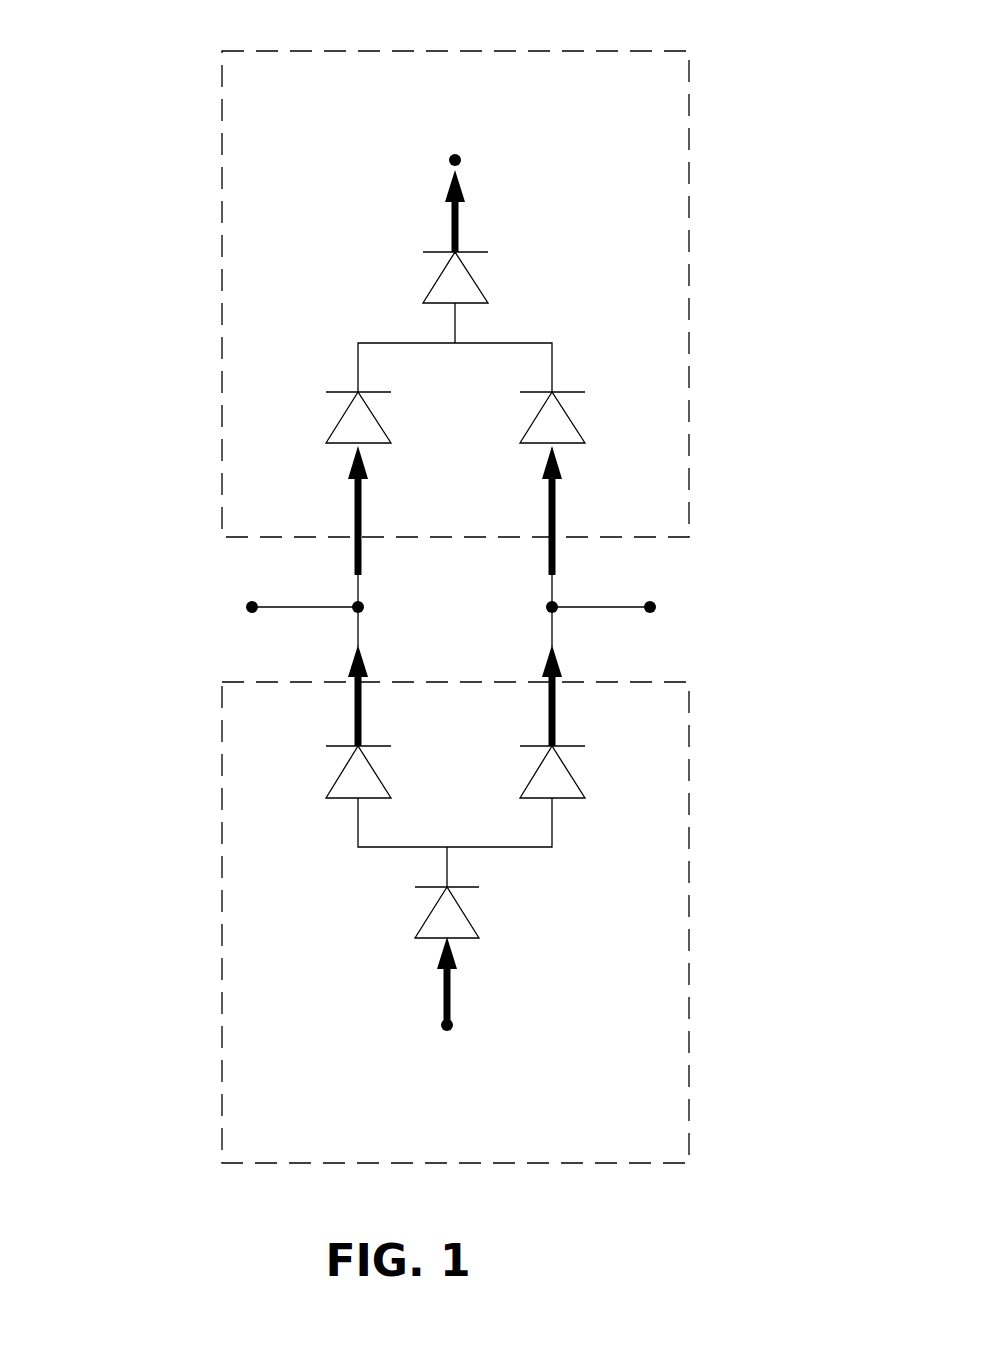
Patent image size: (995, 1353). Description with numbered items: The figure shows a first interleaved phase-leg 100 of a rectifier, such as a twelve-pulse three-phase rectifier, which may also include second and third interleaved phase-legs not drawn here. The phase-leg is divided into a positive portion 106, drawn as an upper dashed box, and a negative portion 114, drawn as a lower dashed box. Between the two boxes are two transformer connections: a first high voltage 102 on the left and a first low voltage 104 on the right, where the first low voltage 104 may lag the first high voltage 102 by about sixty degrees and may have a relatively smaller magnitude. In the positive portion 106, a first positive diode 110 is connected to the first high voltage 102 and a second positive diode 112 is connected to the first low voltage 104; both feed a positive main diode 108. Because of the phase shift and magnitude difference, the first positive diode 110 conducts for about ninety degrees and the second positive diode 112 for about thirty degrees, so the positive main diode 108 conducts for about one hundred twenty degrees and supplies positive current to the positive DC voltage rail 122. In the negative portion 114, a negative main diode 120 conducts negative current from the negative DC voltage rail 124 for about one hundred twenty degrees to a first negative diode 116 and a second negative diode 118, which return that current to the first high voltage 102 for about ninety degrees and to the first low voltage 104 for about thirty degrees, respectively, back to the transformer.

The first interleaved phase-leg 100 is at (148, 52).
The first high voltage 102 is at (250, 601).
The first low voltage 104 is at (655, 593).
The positive portion 106 is at (578, 51).
The positive main diode 108 is at (472, 277).
The first positive diode 110 is at (338, 422).
The second positive diode 112 is at (570, 422).
The negative portion 114 is at (577, 1163).
The first negative diode 116 is at (338, 777).
The second negative diode 118 is at (570, 777).
The negative main diode 120 is at (468, 917).
The positive DC voltage rail 122 is at (452, 157).
The negative DC voltage rail 124 is at (445, 1031).